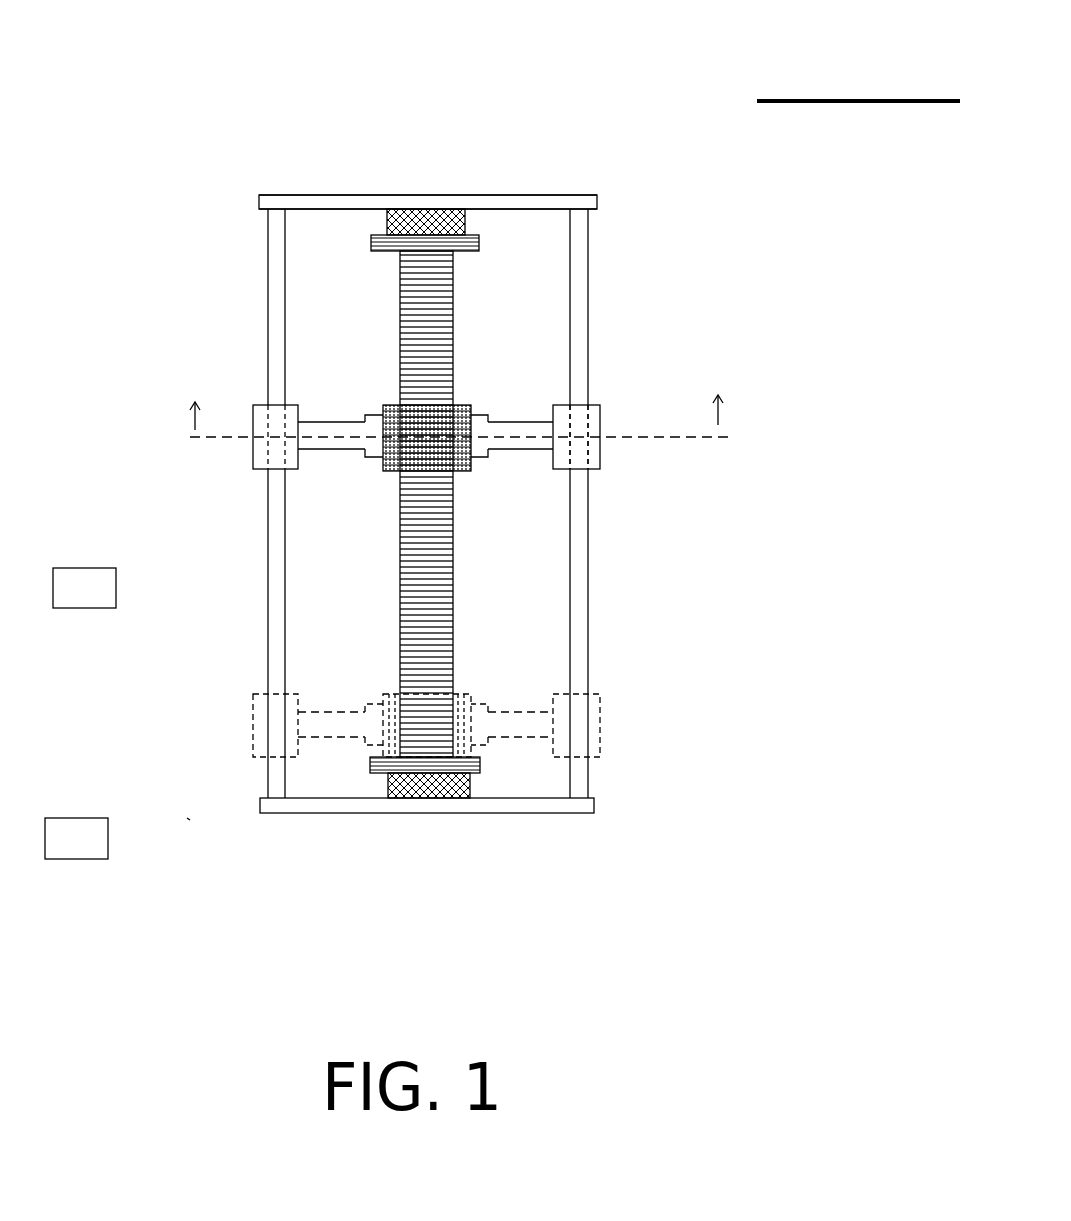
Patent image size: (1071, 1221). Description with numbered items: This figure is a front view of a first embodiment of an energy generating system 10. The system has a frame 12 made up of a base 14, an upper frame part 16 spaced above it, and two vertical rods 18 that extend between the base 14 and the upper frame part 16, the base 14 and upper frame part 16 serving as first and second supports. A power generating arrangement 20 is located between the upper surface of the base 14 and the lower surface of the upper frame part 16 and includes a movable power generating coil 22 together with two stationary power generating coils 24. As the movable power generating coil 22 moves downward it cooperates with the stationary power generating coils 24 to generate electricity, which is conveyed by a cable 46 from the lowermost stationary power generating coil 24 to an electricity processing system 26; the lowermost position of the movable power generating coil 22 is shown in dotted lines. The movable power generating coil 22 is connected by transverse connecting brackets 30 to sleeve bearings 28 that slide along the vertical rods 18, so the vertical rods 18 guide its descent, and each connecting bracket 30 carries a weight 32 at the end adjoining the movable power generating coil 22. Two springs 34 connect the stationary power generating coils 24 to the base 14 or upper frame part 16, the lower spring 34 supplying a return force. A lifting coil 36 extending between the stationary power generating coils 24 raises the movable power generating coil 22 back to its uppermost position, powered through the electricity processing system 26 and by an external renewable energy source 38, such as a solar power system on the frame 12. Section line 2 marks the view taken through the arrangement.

The energy generating system 10 is at (459, 90).
The frame 12 is at (568, 183).
The base 14 is at (555, 805).
The upper frame part 16 is at (593, 198).
The vertical rods 18 is at (278, 309).
The power generating arrangement 20 is at (377, 312).
The movable power generating coil 22 is at (463, 408).
The stationary power generating coils 24 is at (462, 252).
The electricity processing system 26 is at (370, 770).
The sleeve bearings 28 is at (253, 450).
The transverse connecting brackets 30 is at (328, 443).
The weight 32 is at (373, 447).
The springs 34 is at (437, 208).
The lifting coil 36 is at (445, 620).
The renewable energy source 38 is at (402, 574).
The cable 46 is at (190, 820).
The section line 2- 2 is at (464, 399).